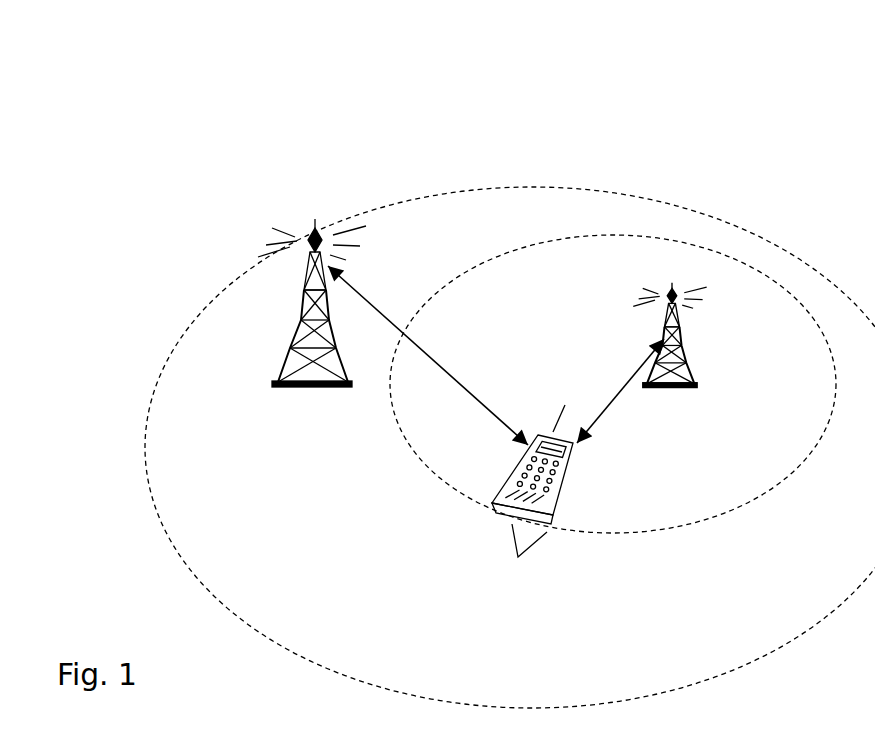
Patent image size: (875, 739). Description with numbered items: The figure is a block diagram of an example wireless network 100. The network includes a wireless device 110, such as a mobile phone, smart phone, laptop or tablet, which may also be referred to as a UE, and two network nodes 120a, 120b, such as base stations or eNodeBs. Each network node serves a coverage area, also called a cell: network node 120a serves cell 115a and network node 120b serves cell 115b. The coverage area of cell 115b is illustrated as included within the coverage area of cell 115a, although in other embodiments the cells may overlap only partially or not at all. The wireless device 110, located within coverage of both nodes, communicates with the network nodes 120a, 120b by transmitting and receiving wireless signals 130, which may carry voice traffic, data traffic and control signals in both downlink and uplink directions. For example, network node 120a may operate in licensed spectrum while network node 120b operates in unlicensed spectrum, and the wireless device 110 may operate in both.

The wireless network 100 is at (501, 137).
The wireless device 110 is at (543, 528).
The cell 115a is at (510, 447).
The cell 115b is at (613, 384).
The network node 120a is at (290, 328).
The network node 120b is at (655, 323).
The wireless signals 130 is at (496, 359).